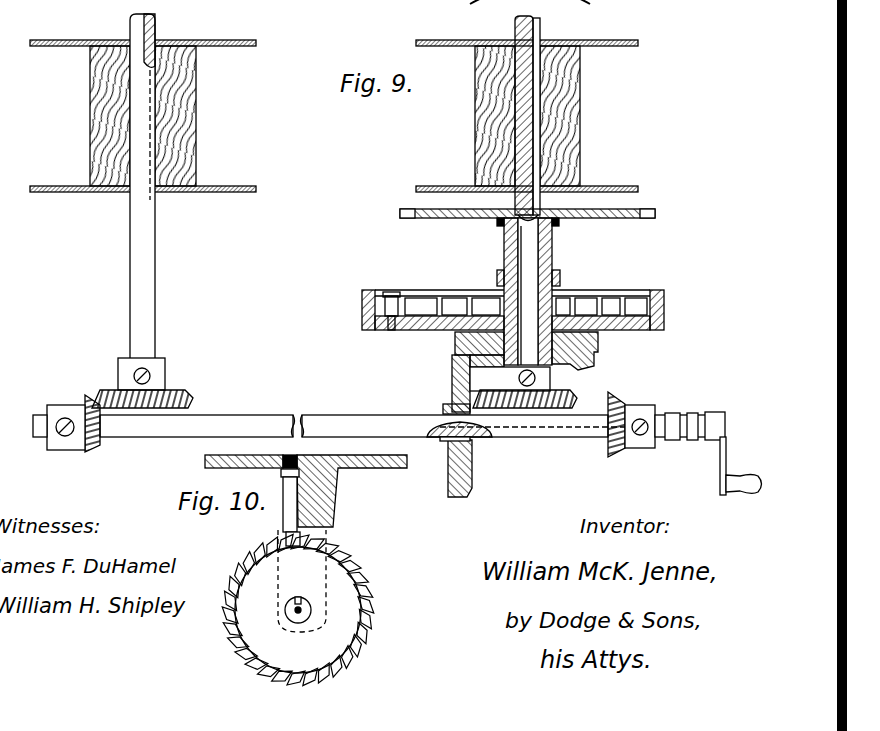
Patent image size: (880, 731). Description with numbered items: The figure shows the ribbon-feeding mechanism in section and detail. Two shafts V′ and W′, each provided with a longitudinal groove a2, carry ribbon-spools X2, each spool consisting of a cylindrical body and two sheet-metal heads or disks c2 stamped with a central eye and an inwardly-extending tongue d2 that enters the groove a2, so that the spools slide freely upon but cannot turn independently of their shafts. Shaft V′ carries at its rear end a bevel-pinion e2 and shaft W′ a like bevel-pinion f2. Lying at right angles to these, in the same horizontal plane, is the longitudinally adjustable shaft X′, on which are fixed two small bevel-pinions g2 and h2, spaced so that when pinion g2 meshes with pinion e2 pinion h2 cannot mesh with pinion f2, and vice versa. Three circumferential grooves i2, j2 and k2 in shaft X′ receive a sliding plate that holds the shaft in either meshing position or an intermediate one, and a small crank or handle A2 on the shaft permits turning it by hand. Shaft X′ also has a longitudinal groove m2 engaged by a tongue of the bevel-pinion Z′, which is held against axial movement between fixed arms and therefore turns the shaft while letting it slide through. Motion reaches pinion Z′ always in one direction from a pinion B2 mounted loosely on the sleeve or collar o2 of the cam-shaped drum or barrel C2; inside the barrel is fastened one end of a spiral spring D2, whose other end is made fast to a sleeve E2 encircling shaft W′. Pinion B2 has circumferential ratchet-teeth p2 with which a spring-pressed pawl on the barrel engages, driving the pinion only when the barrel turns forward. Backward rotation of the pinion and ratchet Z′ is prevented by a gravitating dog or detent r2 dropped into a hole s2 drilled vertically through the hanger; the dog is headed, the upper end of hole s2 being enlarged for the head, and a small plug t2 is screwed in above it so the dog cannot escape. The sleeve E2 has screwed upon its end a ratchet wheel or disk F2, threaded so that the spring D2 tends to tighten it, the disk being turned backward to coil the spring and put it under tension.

In FIG. 9, the longitudinal groove a2 is at (157, 22).
In FIG. 9, the heads or disks c2 is at (66, 45).
In FIG. 9, the inwardly-extending tongue d2 is at (158, 40).
In FIG. 9, the ribbon-spool X2 is at (197, 138).
In FIG. 9, the shaft V′ is at (130, 246).
In FIG. 9, the bevel-pinion e2 is at (176, 390).
In FIG. 9, the bevel-pinion g2 is at (93, 452).
In FIG. 9, the shaft X′ is at (381, 418).
In FIG. 10, the shaft X′ is at (294, 610).
In FIG. 9, the ratchet wheel or disk F2 is at (650, 210).
In FIG. 9, the shaft W′ is at (528, 240).
In FIG. 9, the sleeve E2 is at (552, 264).
In FIG. 9, the spiral spring D2 is at (451, 300).
In FIG. 9, the cam-shaped drum or barrel C2 is at (664, 308).
In FIG. 9, the circumferential ratchet-teeth p2 is at (455, 343).
In FIG. 9, the pinion B2 is at (534, 351).
In FIG. 9, the bevel-pinion Z′ is at (452, 385).
In FIG. 10, the bevel-pinion Z′ is at (297, 608).
In FIG. 9, the sleeve or collar o2 is at (552, 376).
In FIG. 9, the bevel-pinion f2 is at (575, 402).
In FIG. 9, the bevel-pinion h2 is at (664, 417).
In FIG. 9, the circumferential groove i2 is at (672, 412).
In FIG. 9, the circumferential groove j2 is at (692, 412).
In FIG. 9, the circumferential groove k2 is at (712, 411).
In FIG. 9, the crank or handle A2 is at (726, 448).
In FIG. 9, the longitudinal groove m2 is at (478, 440).
In FIG. 10, the longitudinal groove m2 is at (298, 600).
In FIG. 10, the plug t2 is at (300, 457).
In FIG. 10, the hole s2 is at (281, 474).
In FIG. 10, the gravitating dog or detent r2 is at (284, 520).